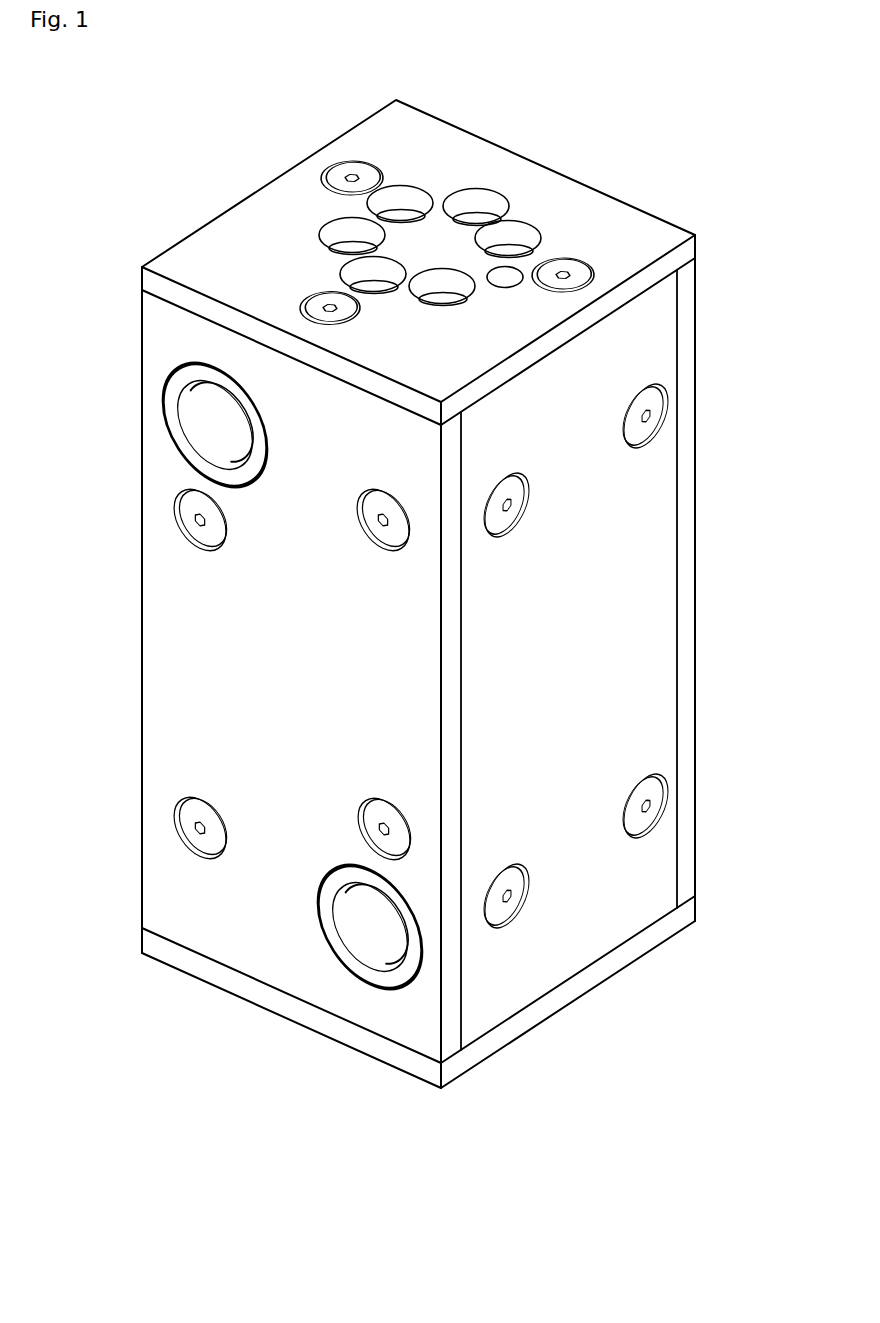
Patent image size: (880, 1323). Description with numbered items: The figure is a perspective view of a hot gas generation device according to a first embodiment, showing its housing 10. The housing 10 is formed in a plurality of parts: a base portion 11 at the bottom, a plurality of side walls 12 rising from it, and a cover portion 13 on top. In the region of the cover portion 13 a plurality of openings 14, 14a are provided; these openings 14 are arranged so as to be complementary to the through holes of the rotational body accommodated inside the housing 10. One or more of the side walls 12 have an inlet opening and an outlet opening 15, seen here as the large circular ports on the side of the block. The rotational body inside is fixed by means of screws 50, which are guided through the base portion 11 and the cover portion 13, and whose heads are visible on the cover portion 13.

The housing 10 is at (262, 184).
The base portion 11 is at (623, 955).
The side walls 12 is at (505, 982).
The cover portion 13 is at (410, 133).
The openings 14 is at (377, 202).
The opening 14a is at (508, 273).
The outlet opening 15 is at (192, 437).
The screws 50 is at (583, 273).